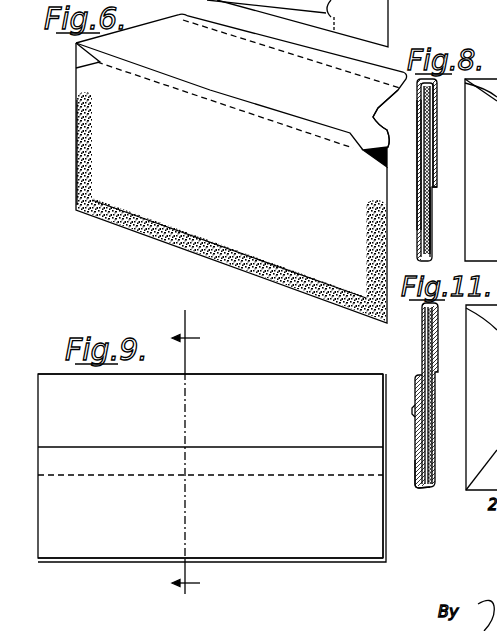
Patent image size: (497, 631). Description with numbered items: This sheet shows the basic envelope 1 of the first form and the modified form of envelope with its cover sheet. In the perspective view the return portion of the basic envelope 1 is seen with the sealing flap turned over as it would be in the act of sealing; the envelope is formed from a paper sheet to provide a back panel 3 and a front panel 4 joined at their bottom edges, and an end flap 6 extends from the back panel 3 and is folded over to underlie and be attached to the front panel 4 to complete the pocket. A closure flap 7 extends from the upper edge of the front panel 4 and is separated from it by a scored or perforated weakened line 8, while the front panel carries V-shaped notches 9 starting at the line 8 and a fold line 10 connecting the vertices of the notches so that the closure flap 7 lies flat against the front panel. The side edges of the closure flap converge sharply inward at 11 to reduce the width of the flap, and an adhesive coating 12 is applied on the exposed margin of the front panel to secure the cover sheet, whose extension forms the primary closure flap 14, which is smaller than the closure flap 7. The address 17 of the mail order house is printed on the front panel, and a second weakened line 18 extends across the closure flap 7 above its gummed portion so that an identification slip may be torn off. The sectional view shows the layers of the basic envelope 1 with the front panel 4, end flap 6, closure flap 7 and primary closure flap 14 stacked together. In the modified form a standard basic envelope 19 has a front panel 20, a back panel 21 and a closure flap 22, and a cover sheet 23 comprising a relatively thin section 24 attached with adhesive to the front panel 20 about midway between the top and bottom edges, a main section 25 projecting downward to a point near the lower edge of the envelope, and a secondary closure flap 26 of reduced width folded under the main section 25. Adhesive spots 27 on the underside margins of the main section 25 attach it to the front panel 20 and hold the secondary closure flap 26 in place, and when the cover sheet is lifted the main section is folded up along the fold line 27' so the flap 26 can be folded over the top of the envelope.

In FIG. 6, the basic envelope 1 is at (73, 89).
In FIG. 8, the basic envelope 1 is at (437, 235).
In FIG. 8, the back panel 3 is at (430, 202).
In FIG. 6, the front panel 4 is at (230, 244).
In FIG. 8, the front panel 4 is at (418, 200).
In FIG. 8, the end flap 6 is at (418, 167).
In FIG. 6, the closure flap 7 is at (145, 33).
In FIG. 8, the closure flap 7 is at (437, 152).
In FIG. 6, the weakened line 8 is at (170, 73).
In FIG. 6, the V-shaped notch 9 is at (78, 63).
In FIG. 6, the fold line 10 is at (225, 104).
In FIG. 6, the converging side edges 11 is at (186, 454).
In FIG. 6, the adhesive coating 12 is at (77, 178).
In FIG. 8, the primary closure flap 14 is at (436, 112).
In FIG. 6, the address 17 is at (217, 163).
In FIG. 6, the second weakened line 18 is at (340, 70).
In FIG. 9, the basic envelope 19 is at (231, 371).
In FIG. 11, the basic envelope 19 is at (418, 315).
In FIG. 9, the front panel 20 is at (297, 386).
In FIG. 11, the front panel 20 is at (423, 340).
In FIG. 11, the back panel 21 is at (435, 450).
In FIG. 11, the closure flap 22 is at (438, 351).
In FIG. 9, the cover sheet 23 is at (388, 530).
In FIG. 9, the thin section 24 is at (278, 455).
In FIG. 11, the thin section 24 is at (417, 385).
In FIG. 9, the main section 25 is at (293, 540).
In FIG. 11, the main section 25 is at (416, 438).
In FIG. 11, the secondary closure flap 26 is at (417, 470).
In FIG. 9, the adhesive spots 27 is at (210, 484).
In FIG. 11, the fold line 27' is at (402, 401).